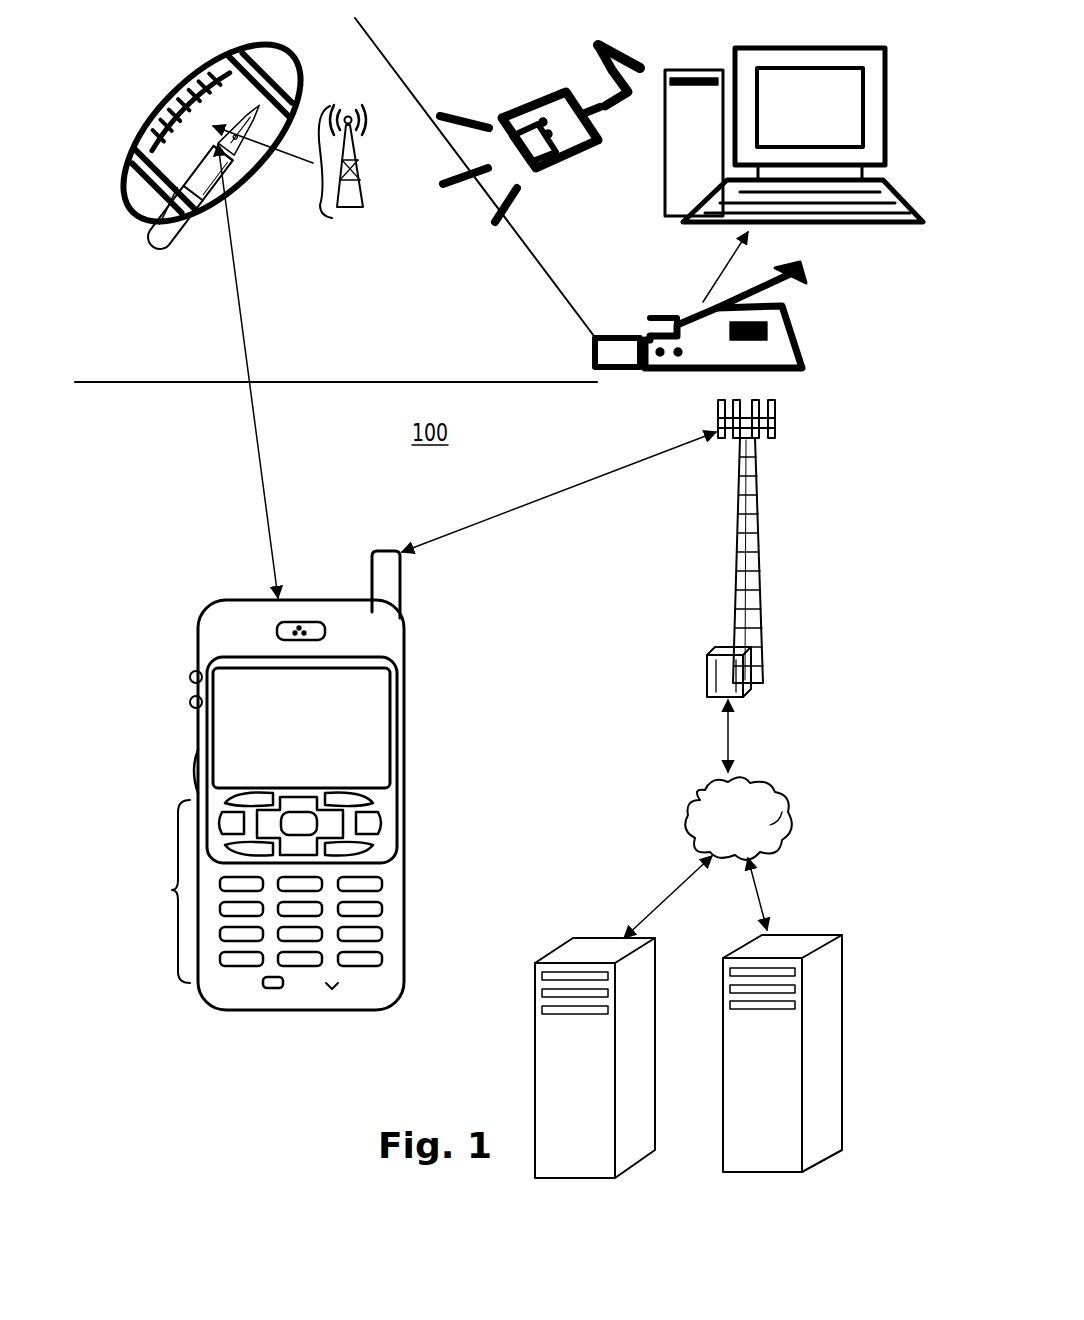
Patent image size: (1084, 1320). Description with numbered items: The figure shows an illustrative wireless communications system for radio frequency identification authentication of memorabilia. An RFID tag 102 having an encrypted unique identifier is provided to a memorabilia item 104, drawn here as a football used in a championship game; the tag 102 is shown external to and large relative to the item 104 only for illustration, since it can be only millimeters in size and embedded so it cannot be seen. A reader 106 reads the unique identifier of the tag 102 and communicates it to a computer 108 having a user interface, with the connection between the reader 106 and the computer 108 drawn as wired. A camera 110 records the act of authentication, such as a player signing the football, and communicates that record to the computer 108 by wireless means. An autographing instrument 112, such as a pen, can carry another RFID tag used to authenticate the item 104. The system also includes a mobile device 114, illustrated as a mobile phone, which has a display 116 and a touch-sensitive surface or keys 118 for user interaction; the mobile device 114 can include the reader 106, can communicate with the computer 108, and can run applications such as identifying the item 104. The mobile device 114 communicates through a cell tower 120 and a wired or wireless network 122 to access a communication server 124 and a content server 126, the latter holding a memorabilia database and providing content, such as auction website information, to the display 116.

The RFID tag 102 is at (360, 207).
The memorabilia item 104 is at (150, 106).
The reader 106 is at (530, 90).
The computer 108 is at (722, 228).
The camera 110 is at (828, 276).
The autographing instrument 112 is at (130, 323).
The mobile device 114 is at (224, 1019).
The display 116 is at (387, 732).
The keys 118 is at (153, 891).
The cell tower 120 is at (735, 562).
The network 122 is at (700, 847).
The communication server 124 is at (540, 1031).
The content server 126 is at (725, 1012).